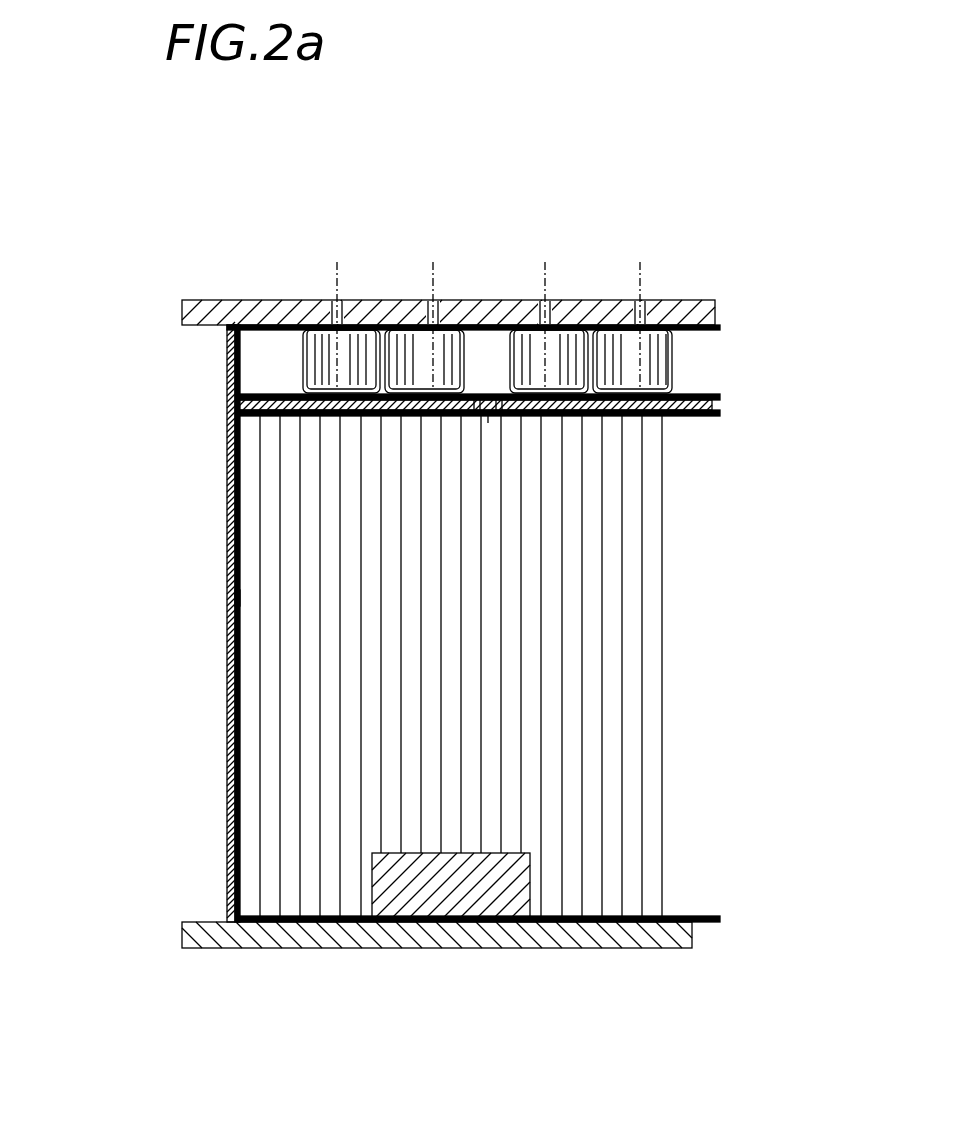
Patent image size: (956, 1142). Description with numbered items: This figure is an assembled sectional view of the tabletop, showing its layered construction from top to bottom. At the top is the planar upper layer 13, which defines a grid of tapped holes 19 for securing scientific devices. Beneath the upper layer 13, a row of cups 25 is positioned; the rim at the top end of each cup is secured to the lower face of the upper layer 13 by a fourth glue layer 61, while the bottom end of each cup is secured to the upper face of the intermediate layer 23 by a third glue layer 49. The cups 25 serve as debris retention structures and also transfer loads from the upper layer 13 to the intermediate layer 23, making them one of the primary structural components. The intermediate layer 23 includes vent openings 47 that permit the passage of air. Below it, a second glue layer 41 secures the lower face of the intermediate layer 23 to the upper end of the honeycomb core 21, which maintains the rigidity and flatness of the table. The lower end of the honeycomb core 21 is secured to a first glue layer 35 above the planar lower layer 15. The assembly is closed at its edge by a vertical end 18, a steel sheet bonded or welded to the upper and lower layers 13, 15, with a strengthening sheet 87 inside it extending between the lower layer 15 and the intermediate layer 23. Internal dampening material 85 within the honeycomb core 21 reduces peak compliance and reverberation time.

The upper layer 13 is at (164, 304).
The fourth glue layer 61 is at (718, 326).
The tapped holes 19 is at (336, 300).
The cups 25 is at (294, 370).
The vent openings 47 is at (489, 398).
The third glue layer 49 is at (700, 397).
The intermediate layer 23 is at (727, 406).
The second glue layer 41 is at (705, 415).
The ends 18 is at (227, 520).
The strengthening sheets 87 is at (240, 598).
The honeycomb core 21 is at (683, 617).
The internal dampening material 85 is at (452, 853).
The first glue layer 35 is at (718, 917).
The lower layer 15 is at (175, 939).